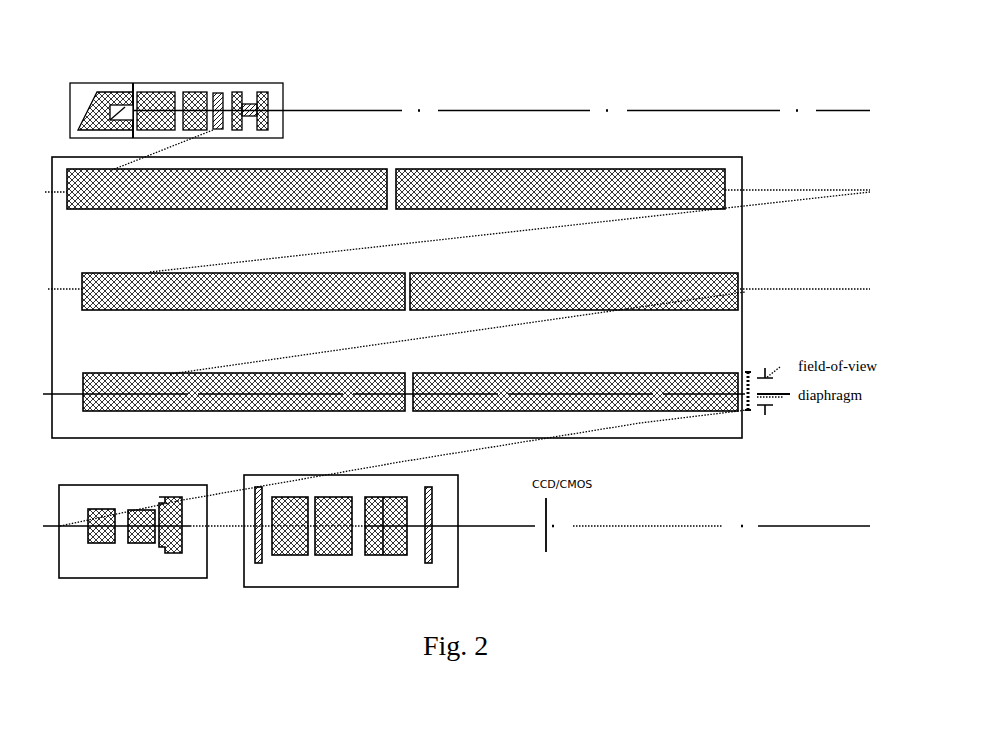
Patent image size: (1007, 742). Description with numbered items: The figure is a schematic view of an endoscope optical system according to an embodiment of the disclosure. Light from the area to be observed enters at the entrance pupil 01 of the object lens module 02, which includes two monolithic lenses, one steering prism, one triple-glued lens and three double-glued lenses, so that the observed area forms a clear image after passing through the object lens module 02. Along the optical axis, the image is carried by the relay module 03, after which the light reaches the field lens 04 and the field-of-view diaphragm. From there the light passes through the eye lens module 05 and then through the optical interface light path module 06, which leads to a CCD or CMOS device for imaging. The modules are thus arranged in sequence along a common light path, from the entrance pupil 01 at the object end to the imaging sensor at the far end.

The entrance pupil 01 is at (133, 82).
The object lens module 02 is at (222, 82).
The relay module 03 is at (456, 280).
The field lens 04 is at (750, 371).
The eye lens module 05 is at (177, 485).
The optical interface light path module 06 is at (342, 475).